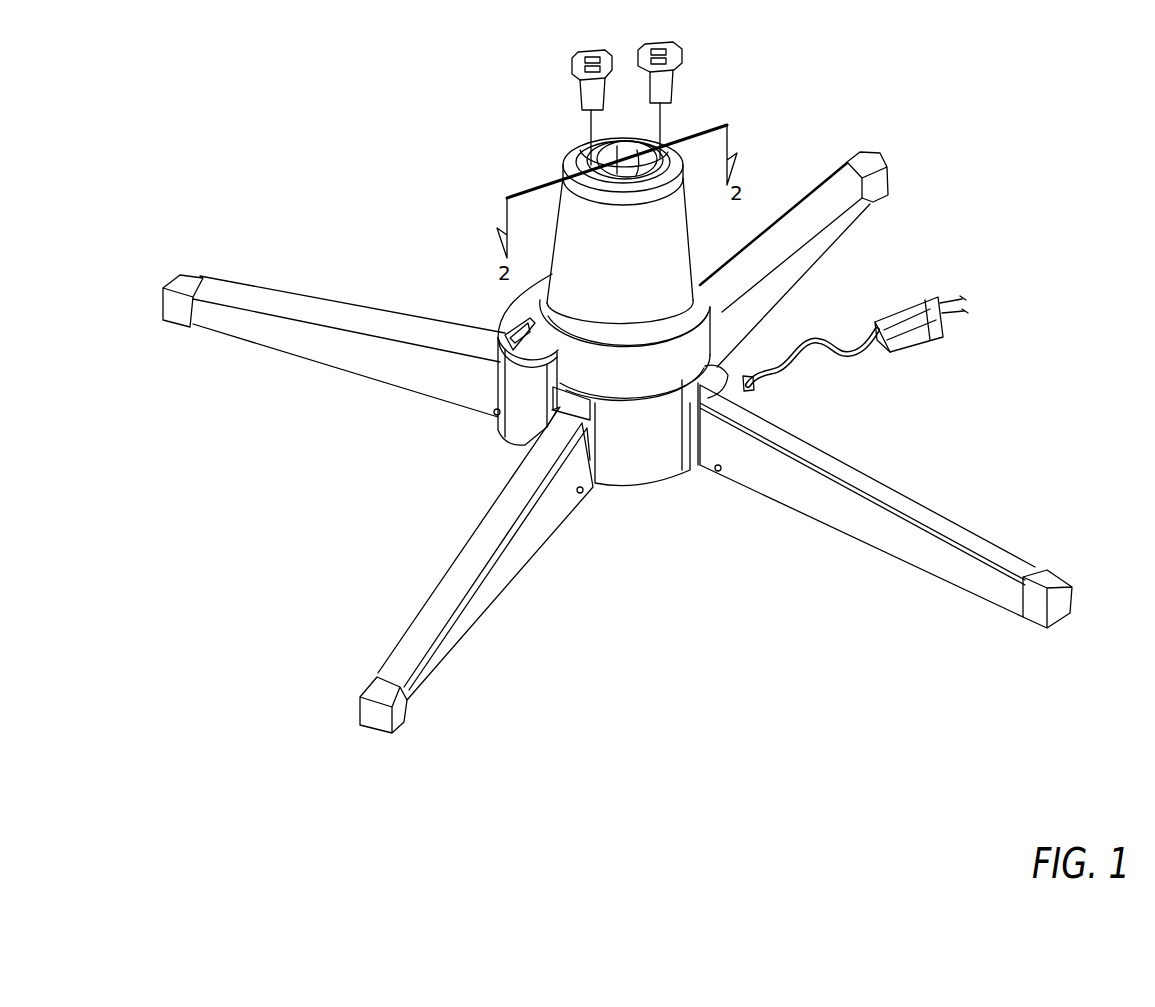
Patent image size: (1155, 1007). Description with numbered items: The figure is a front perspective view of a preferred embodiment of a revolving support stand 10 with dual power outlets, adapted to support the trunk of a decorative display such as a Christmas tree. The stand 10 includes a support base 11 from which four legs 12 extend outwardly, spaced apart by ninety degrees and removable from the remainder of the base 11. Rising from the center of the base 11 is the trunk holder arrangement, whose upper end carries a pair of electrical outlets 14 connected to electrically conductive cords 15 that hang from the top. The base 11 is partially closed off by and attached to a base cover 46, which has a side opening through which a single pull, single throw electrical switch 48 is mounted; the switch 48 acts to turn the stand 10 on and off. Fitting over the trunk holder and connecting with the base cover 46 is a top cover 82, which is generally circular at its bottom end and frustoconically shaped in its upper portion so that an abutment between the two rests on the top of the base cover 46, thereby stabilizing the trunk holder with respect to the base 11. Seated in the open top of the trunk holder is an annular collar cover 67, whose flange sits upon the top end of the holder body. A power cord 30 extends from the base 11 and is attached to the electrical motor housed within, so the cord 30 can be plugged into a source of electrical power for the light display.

The revolving support stand 10 is at (922, 238).
The support base 11 is at (627, 460).
The legs 12 is at (770, 290).
The electrical outlets 14 is at (641, 47).
The electrically conductive cords 15 is at (588, 133).
The power cord 30 is at (793, 372).
The base cover 46 is at (510, 316).
The electrical switch 48 is at (508, 333).
The collar cover 67 is at (677, 133).
The top cover 82 is at (670, 247).